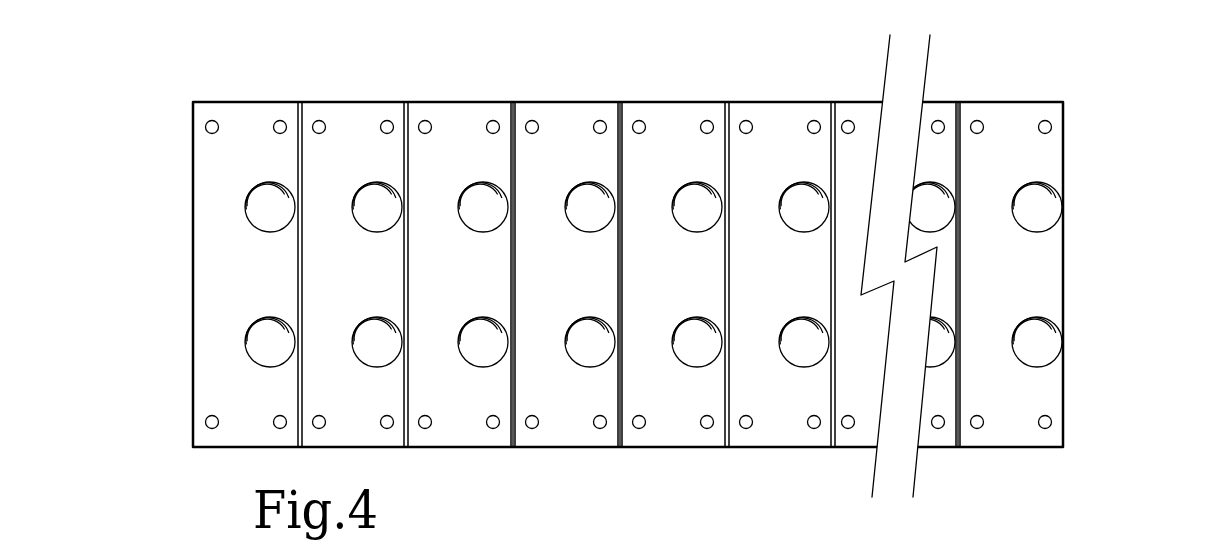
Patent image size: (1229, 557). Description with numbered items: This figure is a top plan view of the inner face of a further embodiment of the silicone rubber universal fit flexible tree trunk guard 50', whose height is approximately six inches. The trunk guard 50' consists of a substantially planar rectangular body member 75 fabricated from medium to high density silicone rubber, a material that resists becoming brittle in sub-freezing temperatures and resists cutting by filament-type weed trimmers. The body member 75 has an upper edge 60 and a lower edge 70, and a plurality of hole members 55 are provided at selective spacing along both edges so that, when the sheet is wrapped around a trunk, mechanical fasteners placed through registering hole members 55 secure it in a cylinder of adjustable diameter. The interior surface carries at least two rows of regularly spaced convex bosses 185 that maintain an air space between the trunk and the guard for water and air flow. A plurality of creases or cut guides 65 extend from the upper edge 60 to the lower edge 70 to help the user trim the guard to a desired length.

The trunk guard 50' is at (628, 264).
The hole members 55 is at (211, 120).
The upper edge 60 is at (557, 102).
The cut guides 65 is at (304, 150).
The lower edge 70 is at (443, 448).
The body member 75 is at (998, 153).
The bosses 185 is at (1045, 197).